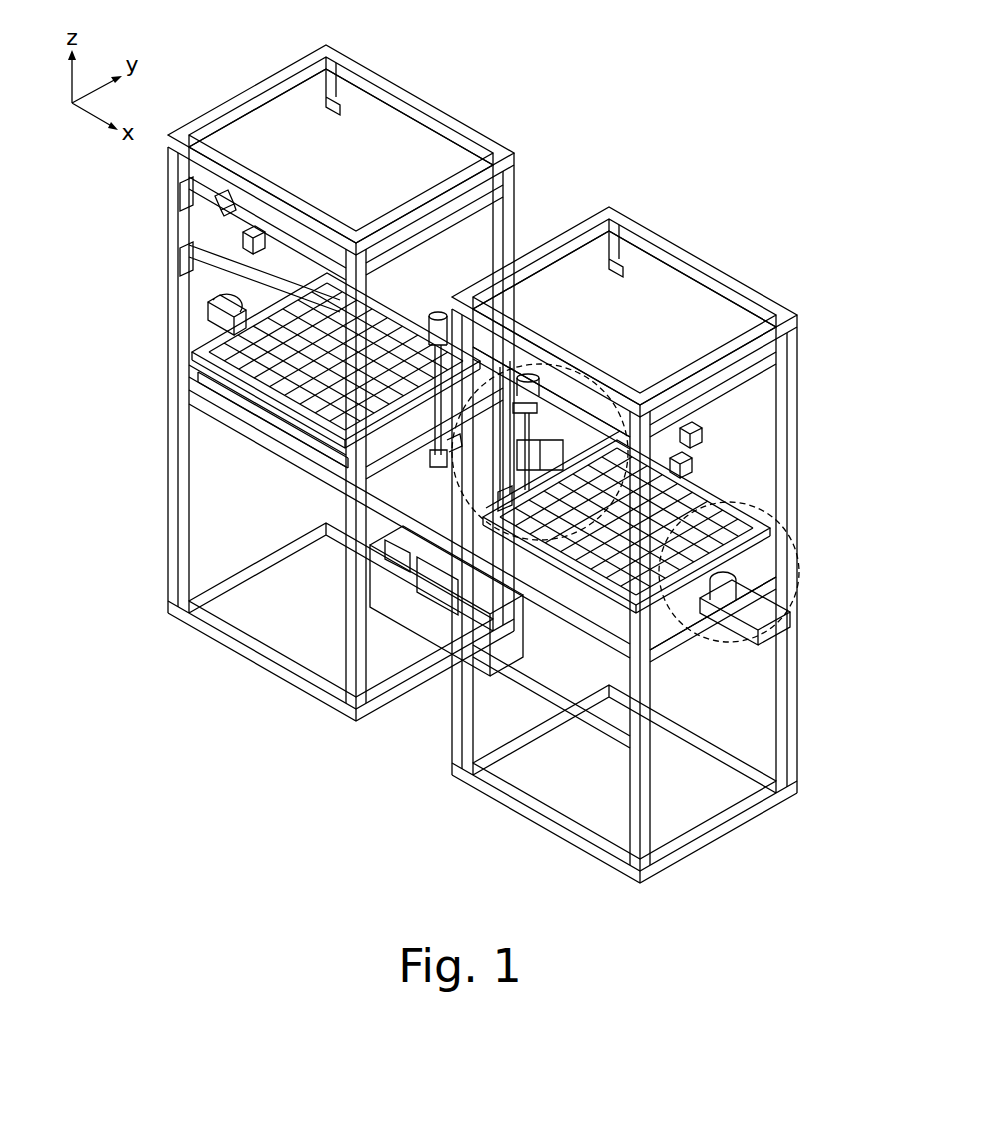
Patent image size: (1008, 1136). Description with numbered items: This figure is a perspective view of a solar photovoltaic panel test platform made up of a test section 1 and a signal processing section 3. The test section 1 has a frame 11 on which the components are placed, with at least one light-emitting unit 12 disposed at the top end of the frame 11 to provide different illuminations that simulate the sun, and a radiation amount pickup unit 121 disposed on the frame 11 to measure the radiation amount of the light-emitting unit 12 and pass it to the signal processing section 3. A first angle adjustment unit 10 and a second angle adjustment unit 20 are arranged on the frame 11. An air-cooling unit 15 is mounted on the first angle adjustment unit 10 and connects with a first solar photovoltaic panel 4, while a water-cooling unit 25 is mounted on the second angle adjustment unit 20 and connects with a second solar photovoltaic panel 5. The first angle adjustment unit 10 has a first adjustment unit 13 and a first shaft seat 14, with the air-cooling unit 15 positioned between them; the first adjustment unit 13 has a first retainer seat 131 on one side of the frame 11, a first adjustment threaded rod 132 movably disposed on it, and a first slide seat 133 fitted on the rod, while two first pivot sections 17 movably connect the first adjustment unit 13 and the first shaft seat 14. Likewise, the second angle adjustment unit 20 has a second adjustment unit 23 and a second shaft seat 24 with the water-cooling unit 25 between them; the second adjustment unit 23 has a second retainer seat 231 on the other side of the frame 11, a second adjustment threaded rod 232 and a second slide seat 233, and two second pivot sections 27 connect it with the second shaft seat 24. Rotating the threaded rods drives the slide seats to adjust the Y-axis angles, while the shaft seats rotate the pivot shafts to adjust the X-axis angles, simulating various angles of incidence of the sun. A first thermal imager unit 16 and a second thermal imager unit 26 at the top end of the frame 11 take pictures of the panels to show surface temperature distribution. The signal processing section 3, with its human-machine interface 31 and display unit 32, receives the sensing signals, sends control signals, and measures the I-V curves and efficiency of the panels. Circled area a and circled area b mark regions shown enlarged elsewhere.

The test section 1 is at (222, 95).
The frame 11 is at (279, 68).
The light-emitting unit 12 is at (345, 135).
The radiation amount pickup unit 121 is at (240, 239).
The first adjustment unit 13 is at (441, 297).
The first retainer seat 131 is at (345, 480).
The first adjustment threaded rod 132 is at (428, 305).
The first slide seat 133 is at (420, 440).
The first shaft seat 14 is at (205, 307).
The air-cooling unit 15 is at (252, 394).
The first thermal imager unit 16 is at (220, 207).
The first pivot section 17 is at (355, 390).
The first angle adjustment unit 10 is at (276, 424).
The first solar photovoltaic panel 4 is at (300, 325).
The second angle adjustment unit 20 is at (570, 605).
The second adjustment unit 23 is at (529, 358).
The second retainer seat 231 is at (435, 440).
The second adjustment threaded rod 232 is at (566, 437).
The second slide seat 233 is at (500, 510).
The second shaft seat 24 is at (762, 615).
The water-cooling unit 25 is at (712, 492).
The second thermal imager unit 26 is at (745, 440).
The second pivot section 27 is at (605, 400).
The signal processing section 3 is at (403, 600).
The human-machine interface 31 is at (393, 558).
The display unit 32 is at (440, 593).
The second solar photovoltaic panel 5 is at (620, 568).
The circled area a is at (548, 540).
The circled area b is at (757, 643).